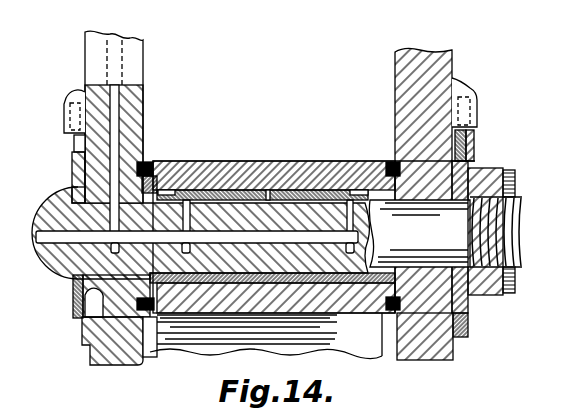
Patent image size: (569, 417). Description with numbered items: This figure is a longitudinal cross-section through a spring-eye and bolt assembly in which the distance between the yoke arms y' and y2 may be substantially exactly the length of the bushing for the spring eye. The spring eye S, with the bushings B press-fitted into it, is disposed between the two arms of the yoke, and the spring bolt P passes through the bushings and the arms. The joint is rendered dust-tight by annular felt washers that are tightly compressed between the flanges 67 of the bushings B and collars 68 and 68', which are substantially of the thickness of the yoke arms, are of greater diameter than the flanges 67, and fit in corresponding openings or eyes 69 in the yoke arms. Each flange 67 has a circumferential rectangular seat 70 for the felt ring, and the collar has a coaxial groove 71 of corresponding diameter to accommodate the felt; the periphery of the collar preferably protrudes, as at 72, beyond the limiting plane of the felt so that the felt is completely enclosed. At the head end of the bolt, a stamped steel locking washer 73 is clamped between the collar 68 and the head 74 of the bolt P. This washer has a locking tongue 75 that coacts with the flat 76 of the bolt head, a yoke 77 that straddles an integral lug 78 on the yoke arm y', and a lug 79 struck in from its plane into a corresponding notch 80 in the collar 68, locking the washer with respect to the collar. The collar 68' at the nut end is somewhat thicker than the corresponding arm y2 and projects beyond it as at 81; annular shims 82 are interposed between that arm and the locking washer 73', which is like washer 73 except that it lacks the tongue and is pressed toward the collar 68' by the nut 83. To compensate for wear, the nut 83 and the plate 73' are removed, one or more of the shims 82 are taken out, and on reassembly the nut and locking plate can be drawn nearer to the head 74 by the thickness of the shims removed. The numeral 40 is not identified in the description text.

The flange 40 is at (97, 362).
The flange 67 is at (178, 182).
The collar 68 is at (167, 137).
The collar 68' is at (450, 113).
The opening or eye 69 is at (75, 153).
The circumferential rectangular seat 70 is at (176, 330).
The coaxial groove 71 is at (127, 360).
The protruding periphery 72 is at (150, 312).
The locking washer 73 is at (42, 177).
The locking washer 73' is at (453, 215).
The head 74 is at (48, 205).
The locking tongue 75 is at (78, 189).
The flat 76 is at (37, 237).
The yoke 77 is at (76, 118).
The integral lug 78 is at (71, 94).
The lug 79 is at (88, 303).
The notch 80 is at (88, 282).
The projecting portion 81 is at (470, 156).
The annular shims 82 is at (468, 138).
The nut 83 is at (483, 282).
The bushing B is at (240, 188).
The bolt P is at (335, 255).
The spring eye S is at (303, 170).
The yoke arm y' is at (134, 117).
The yoke arm y2 is at (407, 68).